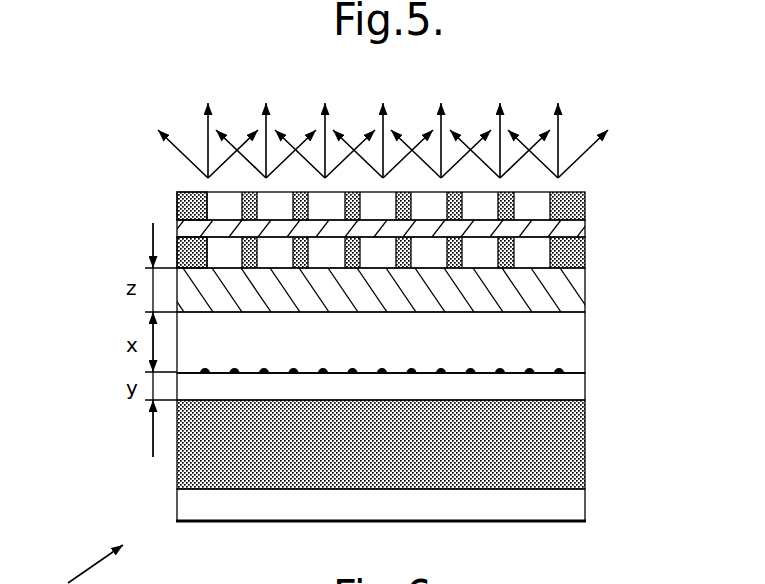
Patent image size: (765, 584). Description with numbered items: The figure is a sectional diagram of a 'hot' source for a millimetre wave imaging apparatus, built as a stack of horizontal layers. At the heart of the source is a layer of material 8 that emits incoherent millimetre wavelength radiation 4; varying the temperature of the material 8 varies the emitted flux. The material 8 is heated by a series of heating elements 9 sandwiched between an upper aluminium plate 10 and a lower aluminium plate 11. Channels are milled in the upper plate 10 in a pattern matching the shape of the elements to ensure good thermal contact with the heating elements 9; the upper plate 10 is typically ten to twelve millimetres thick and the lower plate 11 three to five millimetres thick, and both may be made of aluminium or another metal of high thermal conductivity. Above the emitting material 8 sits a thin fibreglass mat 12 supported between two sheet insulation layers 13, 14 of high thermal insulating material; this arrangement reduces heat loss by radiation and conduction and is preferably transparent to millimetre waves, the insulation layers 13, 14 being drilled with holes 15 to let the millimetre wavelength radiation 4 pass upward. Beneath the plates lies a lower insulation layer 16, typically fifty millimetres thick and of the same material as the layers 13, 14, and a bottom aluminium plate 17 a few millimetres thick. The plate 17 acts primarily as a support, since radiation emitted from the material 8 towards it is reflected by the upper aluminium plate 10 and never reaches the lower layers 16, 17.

The millimetre wavelength radiation 4 is at (383, 121).
The layer of material 8 is at (567, 297).
The heating elements 9 is at (565, 368).
The upper aluminium plate 10 is at (567, 346).
The lower aluminium plate 11 is at (560, 392).
The fibreglass mat 12 is at (570, 231).
The upper sheet insulation layer 13 is at (585, 206).
The lower sheet insulation layer 14 is at (585, 255).
The holes 15 is at (238, 209).
The lower insulation layer 16 is at (565, 453).
The bottom aluminium plate 17 is at (568, 507).